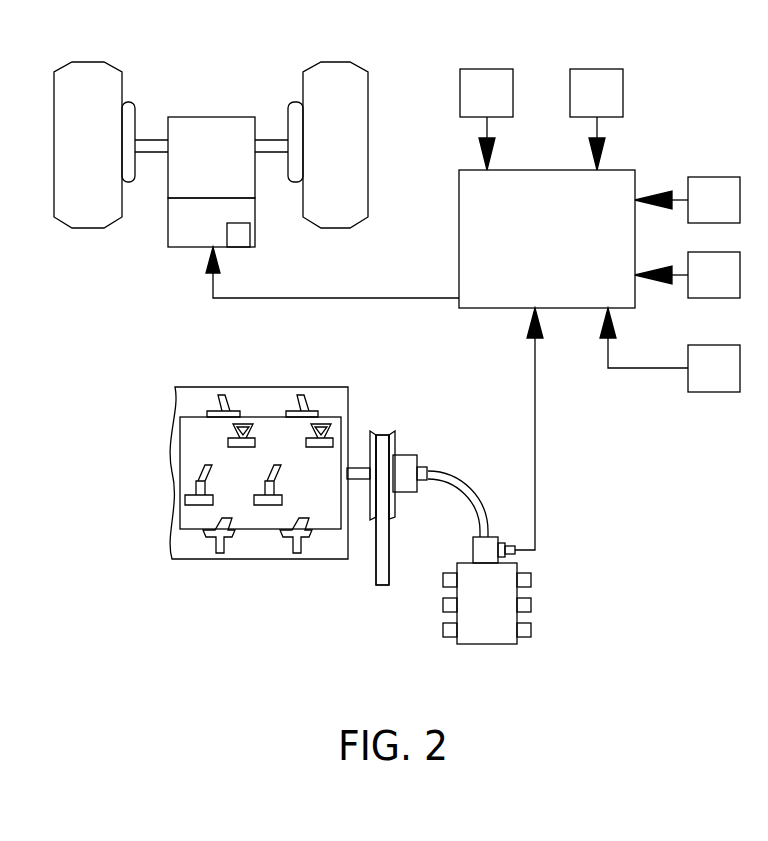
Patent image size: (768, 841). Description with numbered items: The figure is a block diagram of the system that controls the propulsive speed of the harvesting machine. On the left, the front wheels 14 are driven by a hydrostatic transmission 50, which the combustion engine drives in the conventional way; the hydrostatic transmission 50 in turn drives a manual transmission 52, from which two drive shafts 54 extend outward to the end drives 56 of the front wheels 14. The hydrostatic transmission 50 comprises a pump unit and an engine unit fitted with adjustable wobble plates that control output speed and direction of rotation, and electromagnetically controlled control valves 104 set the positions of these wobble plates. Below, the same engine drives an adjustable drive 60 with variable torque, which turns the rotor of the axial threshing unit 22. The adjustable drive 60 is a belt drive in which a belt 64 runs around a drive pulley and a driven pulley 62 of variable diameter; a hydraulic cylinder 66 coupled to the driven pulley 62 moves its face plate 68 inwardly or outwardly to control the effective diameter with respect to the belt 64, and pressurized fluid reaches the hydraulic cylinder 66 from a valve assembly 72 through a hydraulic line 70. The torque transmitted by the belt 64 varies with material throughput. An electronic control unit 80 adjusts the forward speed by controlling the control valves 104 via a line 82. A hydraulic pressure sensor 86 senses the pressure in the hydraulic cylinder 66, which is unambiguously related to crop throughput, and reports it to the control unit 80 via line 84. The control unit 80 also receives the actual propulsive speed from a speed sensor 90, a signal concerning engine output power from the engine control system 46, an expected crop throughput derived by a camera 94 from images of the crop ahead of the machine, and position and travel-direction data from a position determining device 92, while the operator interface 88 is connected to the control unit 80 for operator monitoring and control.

The front wheels 14 is at (82, 212).
The axial threshing unit 22 is at (243, 388).
The engine control system 46 is at (687, 275).
The hydrostatic transmission 50 is at (180, 233).
The manual transmission 52 is at (199, 168).
The drive shafts 54 is at (276, 145).
The end drives 56 is at (129, 173).
The adjustable drive 60 is at (436, 428).
The driven pulley 62 is at (388, 392).
The belt 64 is at (383, 578).
The hydraulic cylinder 66 is at (405, 486).
The face plate 68 is at (391, 432).
The hydraulic line 70 is at (465, 487).
The valve assembly 72 is at (471, 614).
The electronic control unit 80 is at (534, 246).
The line 82 is at (352, 298).
The line 84 is at (535, 430).
The hydraulic pressure sensor 86 is at (513, 546).
The operator interface 88 is at (687, 200).
The speed sensor 90 is at (670, 350).
The position determining device 92 is at (596, 119).
The camera 94 is at (486, 119).
The control valves 104 is at (240, 237).